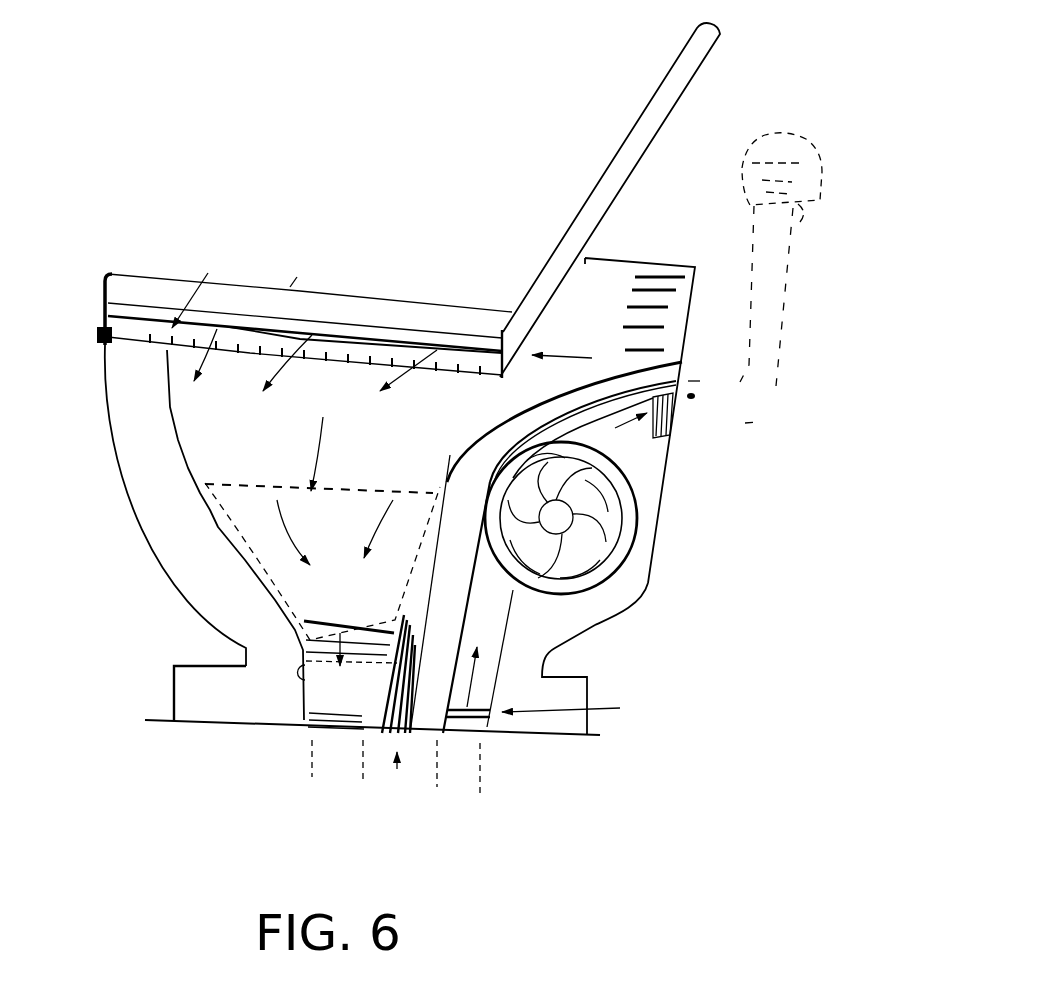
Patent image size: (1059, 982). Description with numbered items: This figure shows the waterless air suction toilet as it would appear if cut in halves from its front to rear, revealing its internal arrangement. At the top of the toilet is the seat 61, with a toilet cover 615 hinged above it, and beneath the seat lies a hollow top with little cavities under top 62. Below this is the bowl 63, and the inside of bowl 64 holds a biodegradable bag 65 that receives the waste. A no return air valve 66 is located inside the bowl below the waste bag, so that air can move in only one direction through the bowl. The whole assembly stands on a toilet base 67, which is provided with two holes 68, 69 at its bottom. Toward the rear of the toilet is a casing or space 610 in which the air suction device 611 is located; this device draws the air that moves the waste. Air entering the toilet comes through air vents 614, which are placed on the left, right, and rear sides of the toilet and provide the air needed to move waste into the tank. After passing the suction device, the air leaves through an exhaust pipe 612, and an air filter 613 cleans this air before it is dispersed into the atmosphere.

The seat 61 is at (165, 280).
The hollow top with little cavities under top 62 is at (148, 338).
The bowl 63 is at (134, 431).
The inside of bowl 64 is at (250, 459).
The biodegradable bag 65 is at (251, 522).
The no return air valve 66 is at (288, 640).
The toilet base 67 is at (158, 690).
The hole 68 is at (298, 727).
The hole 69 is at (485, 764).
The casing or space 610 is at (555, 617).
The air suction device 611 is at (644, 528).
The exhaust pipe 612 is at (735, 406).
The air filter 613 is at (840, 179).
The air vents 614 is at (672, 284).
The toilet cover 615 is at (740, 83).